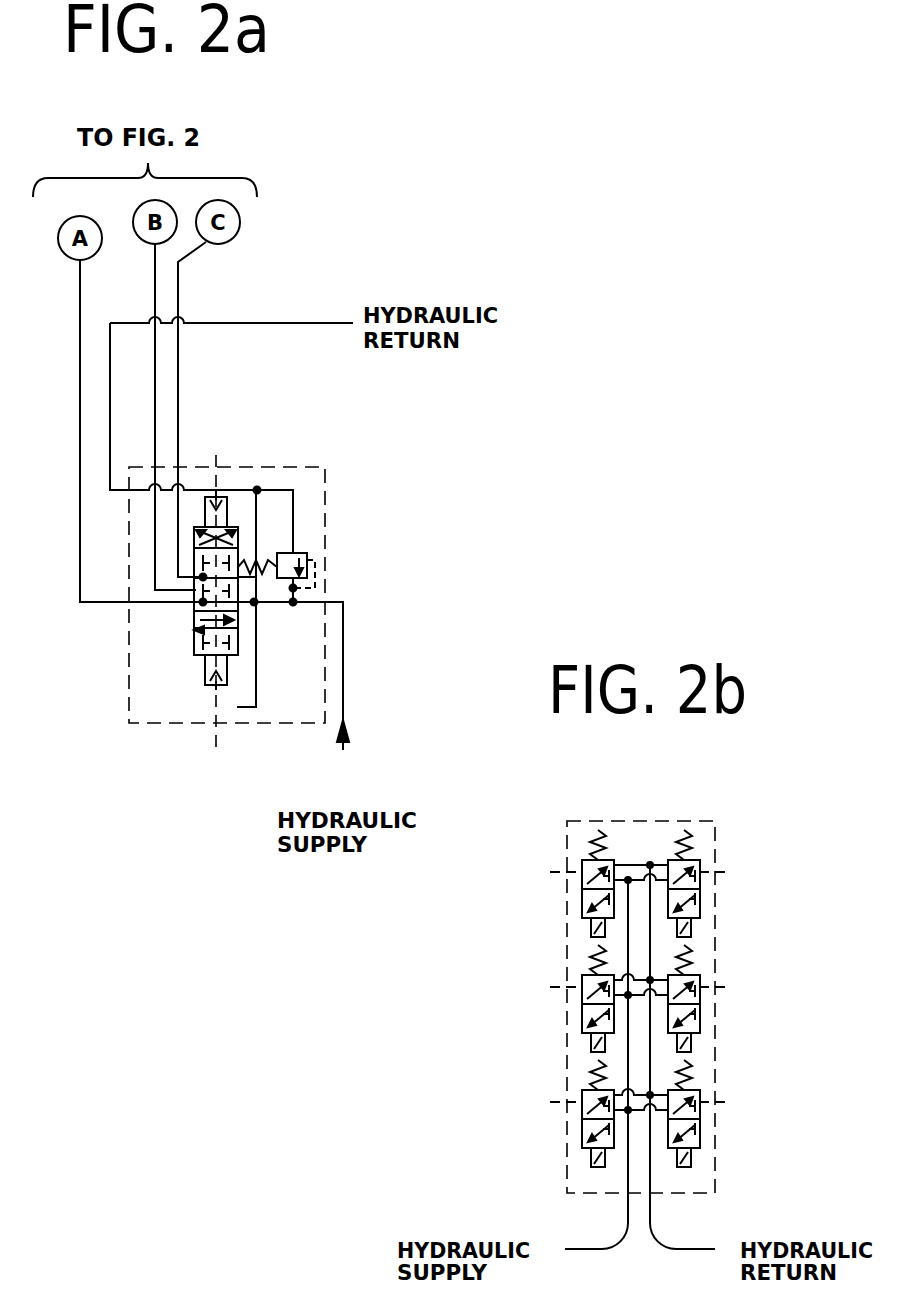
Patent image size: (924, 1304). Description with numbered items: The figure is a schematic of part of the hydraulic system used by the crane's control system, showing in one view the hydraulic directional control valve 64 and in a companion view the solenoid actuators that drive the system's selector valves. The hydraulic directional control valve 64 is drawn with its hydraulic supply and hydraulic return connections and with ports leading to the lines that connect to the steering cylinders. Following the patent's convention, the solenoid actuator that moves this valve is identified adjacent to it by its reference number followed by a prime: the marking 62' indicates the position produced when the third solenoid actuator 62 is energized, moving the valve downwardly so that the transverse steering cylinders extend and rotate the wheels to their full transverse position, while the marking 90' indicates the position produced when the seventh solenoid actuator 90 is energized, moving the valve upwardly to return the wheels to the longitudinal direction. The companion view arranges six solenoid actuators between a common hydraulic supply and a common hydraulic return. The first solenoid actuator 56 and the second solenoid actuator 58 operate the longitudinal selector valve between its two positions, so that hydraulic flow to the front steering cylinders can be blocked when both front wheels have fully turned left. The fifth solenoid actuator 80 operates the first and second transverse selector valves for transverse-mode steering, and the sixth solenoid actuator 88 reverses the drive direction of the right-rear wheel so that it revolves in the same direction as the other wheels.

In FIG. 2a, the third solenoid actuator position indication 62' is at (249, 467).
In FIG. 2a, the hydraulic directional control valve 64 is at (200, 630).
In FIG. 2a, the seventh solenoid actuator position indication 90' is at (184, 681).
In FIG. 2b, the second solenoid actuator 58 is at (582, 862).
In FIG. 2b, the first solenoid actuator 56 is at (703, 880).
In FIG. 2b, the sixth solenoid actuator 88 is at (582, 1000).
In FIG. 2b, the third solenoid actuator 62 is at (728, 998).
In FIG. 2b, the fifth solenoid actuator 80 is at (582, 1128).
In FIG. 2b, the seventh solenoid actuator 90 is at (730, 1113).